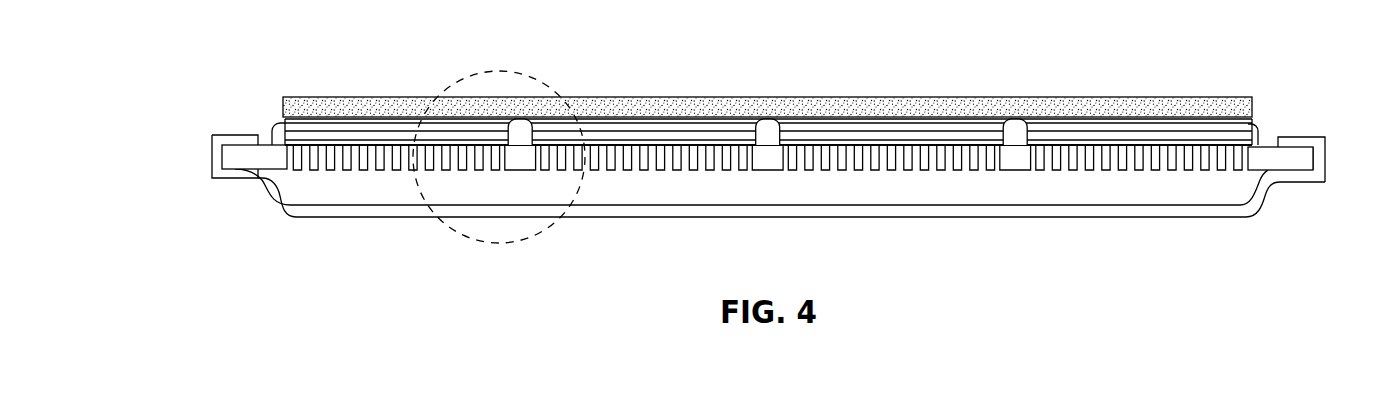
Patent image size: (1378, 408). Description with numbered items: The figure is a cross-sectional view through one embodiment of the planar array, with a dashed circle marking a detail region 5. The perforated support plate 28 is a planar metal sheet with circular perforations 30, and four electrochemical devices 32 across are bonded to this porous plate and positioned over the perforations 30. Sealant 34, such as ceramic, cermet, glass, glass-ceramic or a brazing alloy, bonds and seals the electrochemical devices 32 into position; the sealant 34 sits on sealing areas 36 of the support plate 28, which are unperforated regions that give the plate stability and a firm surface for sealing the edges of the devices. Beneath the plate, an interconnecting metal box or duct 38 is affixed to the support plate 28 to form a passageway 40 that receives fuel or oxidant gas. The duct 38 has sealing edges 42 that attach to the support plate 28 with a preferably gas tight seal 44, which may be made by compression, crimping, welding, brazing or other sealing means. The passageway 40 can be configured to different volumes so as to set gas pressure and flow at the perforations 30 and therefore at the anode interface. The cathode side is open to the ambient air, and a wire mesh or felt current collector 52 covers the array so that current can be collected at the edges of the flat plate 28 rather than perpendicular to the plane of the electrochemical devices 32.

The detail region 5 is at (503, 70).
The perforated support plate 28 is at (1305, 157).
The perforations 30 is at (1162, 165).
The electrochemical devices 32 is at (1093, 136).
The sealant 34 is at (276, 126).
The sealing areas 36 is at (1013, 165).
The interconnecting duct 38 is at (658, 217).
The passageway 40 is at (877, 190).
The sealing edges 42 is at (211, 153).
The gas tight seal 44 is at (243, 170).
The wire mesh or felt current collector 52 is at (313, 96).